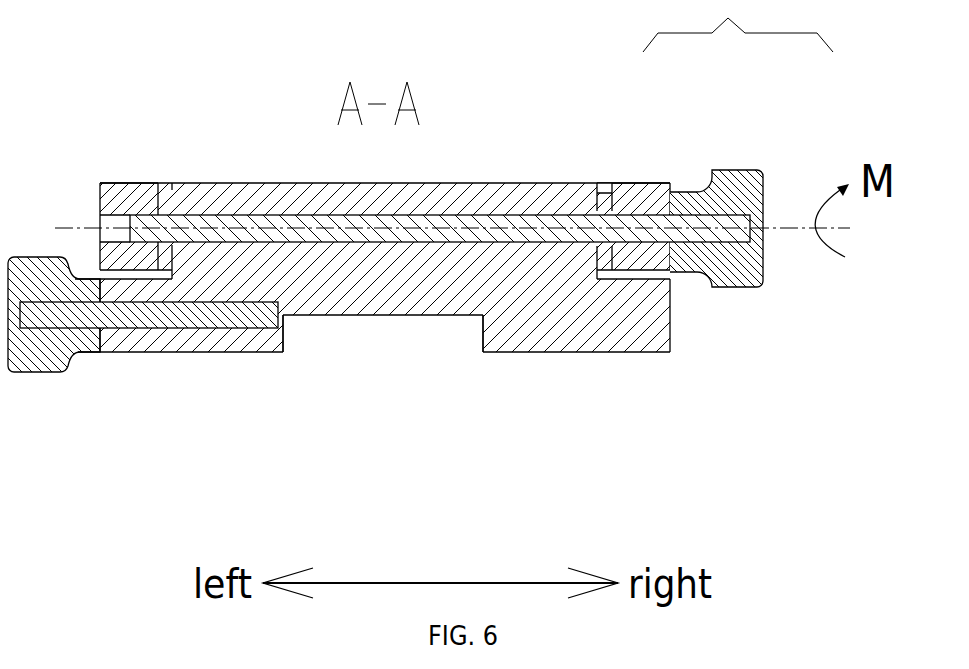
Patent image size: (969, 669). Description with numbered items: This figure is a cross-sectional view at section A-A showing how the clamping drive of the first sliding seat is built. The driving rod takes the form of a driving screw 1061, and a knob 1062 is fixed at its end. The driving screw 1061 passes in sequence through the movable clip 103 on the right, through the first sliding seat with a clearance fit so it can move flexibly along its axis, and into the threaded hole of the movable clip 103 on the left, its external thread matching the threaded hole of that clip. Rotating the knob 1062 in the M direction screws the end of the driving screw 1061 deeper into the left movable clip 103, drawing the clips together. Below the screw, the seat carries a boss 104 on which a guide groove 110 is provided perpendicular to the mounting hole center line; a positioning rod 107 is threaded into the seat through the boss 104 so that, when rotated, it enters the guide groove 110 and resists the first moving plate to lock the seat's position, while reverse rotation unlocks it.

The movable clip 103 is at (118, 183).
The boss 104 is at (607, 337).
The positioning rod 107 is at (172, 318).
The guide groove 110 is at (435, 318).
The driving screw 1061 is at (662, 183).
The knob 1062 is at (745, 197).